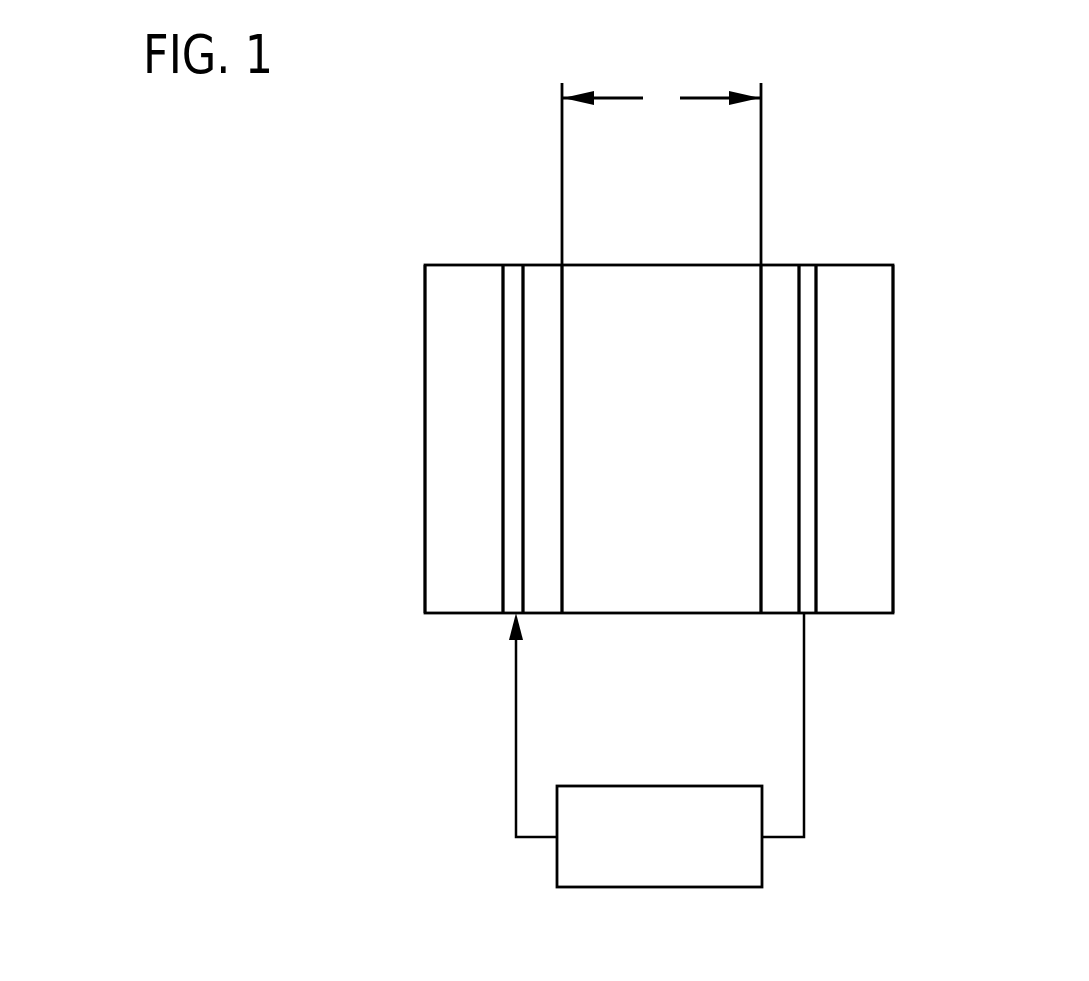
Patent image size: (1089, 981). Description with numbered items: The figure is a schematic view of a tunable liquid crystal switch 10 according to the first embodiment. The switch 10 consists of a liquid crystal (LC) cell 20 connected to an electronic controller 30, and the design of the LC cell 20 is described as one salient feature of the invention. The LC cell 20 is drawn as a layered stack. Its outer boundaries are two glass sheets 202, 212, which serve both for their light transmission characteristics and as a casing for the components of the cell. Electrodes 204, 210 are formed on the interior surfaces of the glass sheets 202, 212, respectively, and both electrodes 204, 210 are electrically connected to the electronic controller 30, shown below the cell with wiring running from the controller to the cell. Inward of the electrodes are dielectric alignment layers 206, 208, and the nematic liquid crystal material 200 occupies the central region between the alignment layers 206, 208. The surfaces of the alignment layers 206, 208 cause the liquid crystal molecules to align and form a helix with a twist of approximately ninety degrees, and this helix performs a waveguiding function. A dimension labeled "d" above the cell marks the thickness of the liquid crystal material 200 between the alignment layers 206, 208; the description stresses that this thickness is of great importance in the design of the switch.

The tunable liquid crystal switch 10 is at (980, 175).
The liquid crystal cell 20 is at (653, 232).
The electronic controller 30 is at (762, 865).
The nematic liquid crystal material 200 is at (660, 590).
The glass sheet 202 is at (440, 496).
The electrode 204 is at (508, 581).
The dielectric alignment layer 206 is at (541, 598).
The dielectric alignment layer 208 is at (771, 598).
The electrode 210 is at (808, 584).
The glass sheet 212 is at (866, 535).